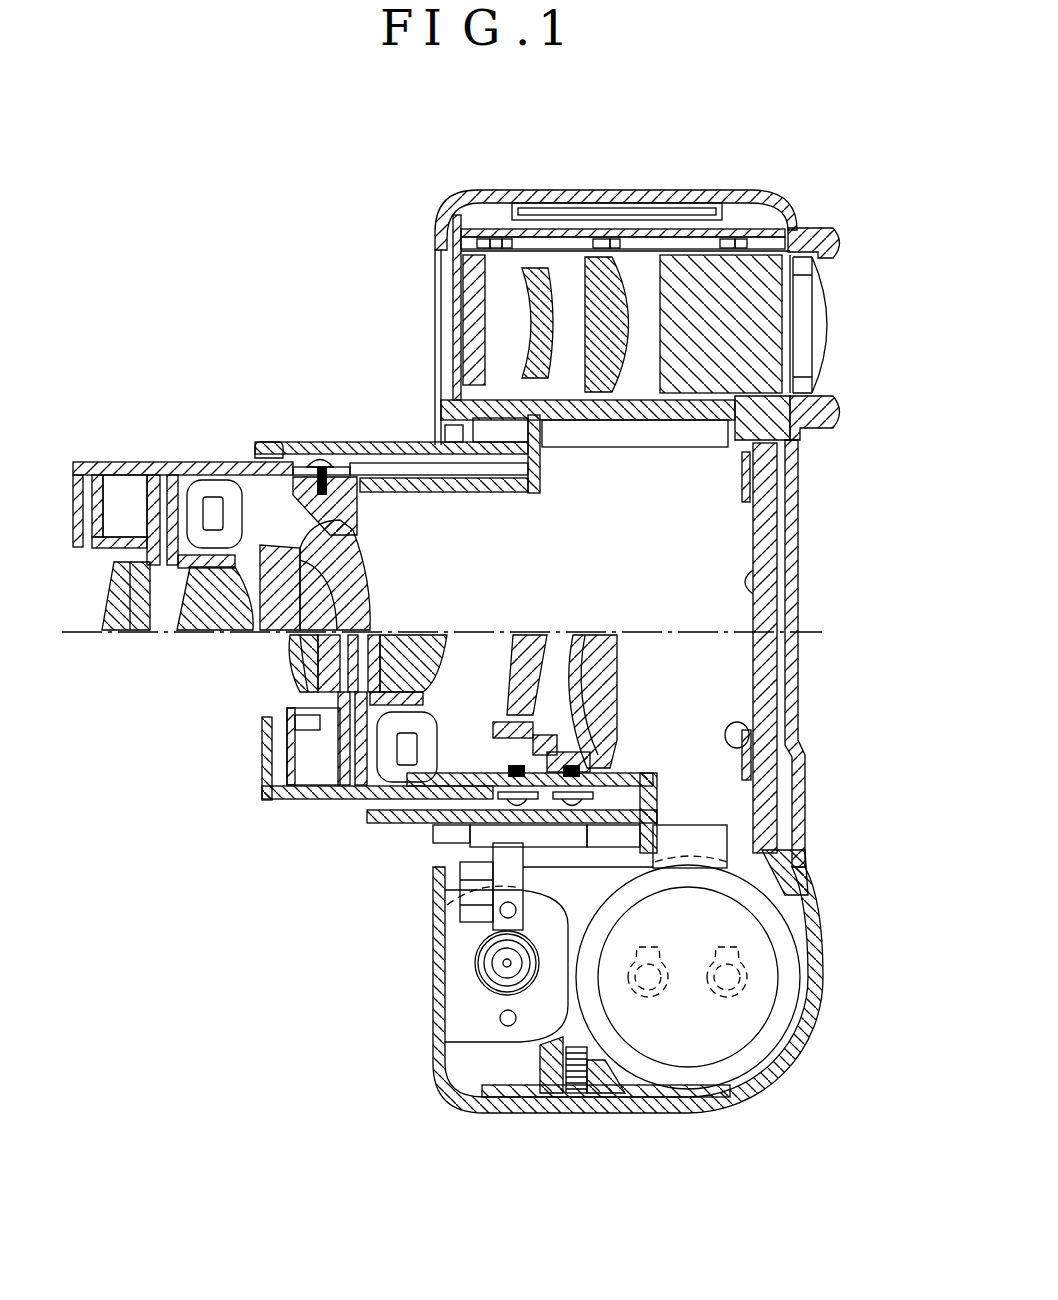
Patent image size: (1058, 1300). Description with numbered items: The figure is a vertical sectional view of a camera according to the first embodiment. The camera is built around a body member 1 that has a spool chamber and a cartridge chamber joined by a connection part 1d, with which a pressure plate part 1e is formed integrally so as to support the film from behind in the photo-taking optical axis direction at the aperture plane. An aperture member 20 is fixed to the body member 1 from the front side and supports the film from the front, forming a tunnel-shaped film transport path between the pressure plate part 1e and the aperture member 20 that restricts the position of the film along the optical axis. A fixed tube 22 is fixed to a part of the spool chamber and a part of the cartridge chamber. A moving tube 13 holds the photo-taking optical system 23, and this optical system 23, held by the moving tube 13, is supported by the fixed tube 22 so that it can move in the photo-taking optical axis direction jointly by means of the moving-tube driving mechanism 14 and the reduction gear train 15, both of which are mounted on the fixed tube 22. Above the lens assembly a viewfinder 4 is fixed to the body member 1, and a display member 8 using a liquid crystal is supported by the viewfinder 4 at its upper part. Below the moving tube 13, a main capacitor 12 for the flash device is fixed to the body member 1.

The body member 1 is at (636, 651).
The connection part 1d is at (758, 527).
The pressure plate part 1e is at (778, 577).
The viewfinder 4 is at (830, 318).
The display member 8 is at (690, 205).
The main capacitor 12 is at (693, 1043).
The moving tube 13 is at (128, 462).
The moving-tube driving mechanism 14 is at (455, 965).
The reduction gear train 15 is at (492, 878).
The aperture member 20 is at (750, 737).
The fixed tube 22 is at (437, 437).
The photo-taking optical system 23 is at (296, 655).